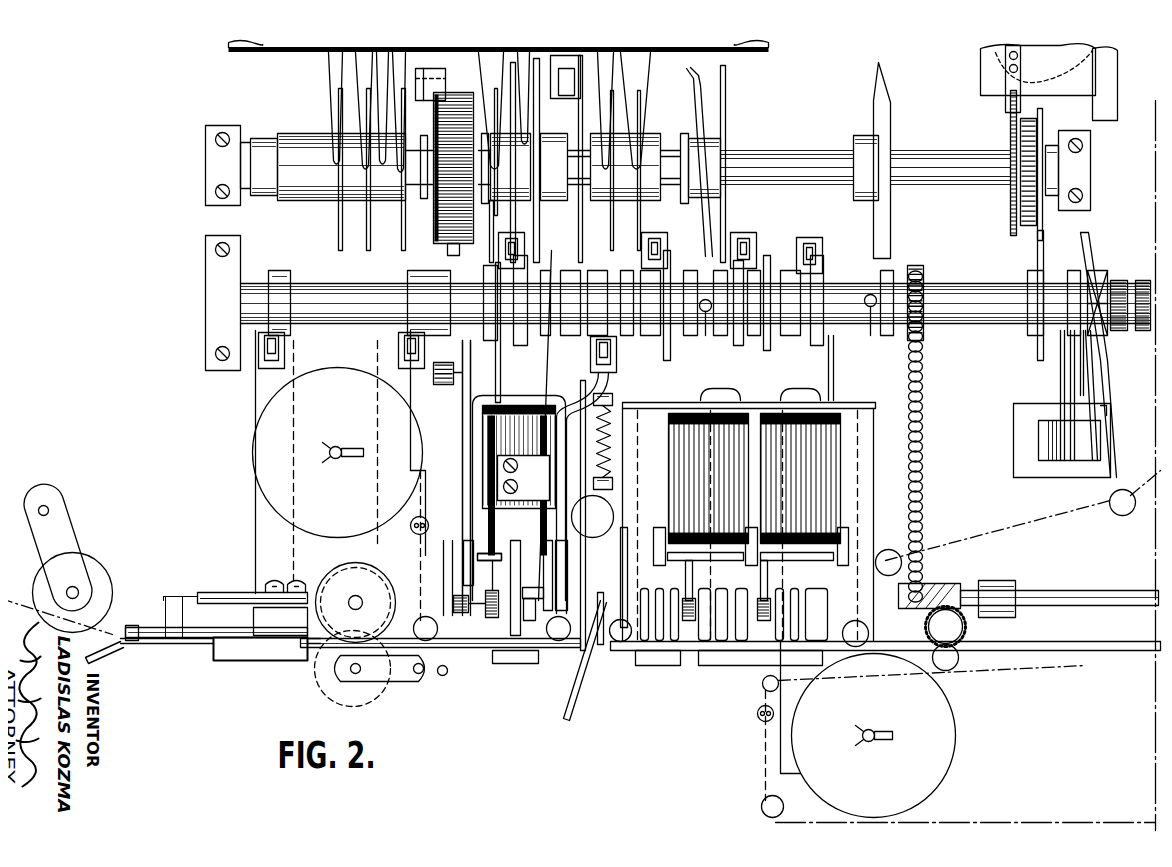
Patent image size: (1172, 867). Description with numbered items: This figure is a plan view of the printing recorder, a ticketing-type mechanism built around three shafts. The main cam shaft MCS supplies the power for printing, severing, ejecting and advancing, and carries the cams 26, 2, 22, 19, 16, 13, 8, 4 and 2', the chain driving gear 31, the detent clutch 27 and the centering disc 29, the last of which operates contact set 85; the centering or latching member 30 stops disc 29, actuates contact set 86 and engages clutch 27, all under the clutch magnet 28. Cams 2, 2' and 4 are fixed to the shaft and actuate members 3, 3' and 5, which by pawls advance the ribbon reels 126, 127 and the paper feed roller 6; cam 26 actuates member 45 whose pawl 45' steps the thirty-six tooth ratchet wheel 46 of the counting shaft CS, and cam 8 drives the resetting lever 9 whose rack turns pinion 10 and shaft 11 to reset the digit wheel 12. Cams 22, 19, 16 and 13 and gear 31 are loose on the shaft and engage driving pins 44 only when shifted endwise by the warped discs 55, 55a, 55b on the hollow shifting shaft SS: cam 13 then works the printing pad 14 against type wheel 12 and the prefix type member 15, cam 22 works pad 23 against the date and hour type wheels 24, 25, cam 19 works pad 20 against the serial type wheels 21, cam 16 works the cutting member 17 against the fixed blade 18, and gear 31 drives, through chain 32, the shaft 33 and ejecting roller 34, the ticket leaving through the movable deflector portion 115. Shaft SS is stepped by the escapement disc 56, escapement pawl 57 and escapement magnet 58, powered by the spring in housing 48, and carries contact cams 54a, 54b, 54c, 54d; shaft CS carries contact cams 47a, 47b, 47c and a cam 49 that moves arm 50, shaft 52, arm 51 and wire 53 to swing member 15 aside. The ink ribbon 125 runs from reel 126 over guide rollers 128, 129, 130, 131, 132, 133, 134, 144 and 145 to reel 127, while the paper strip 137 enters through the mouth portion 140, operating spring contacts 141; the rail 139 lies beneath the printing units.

The counting shaft CS is at (300, 134).
The hollow shifting shaft SS is at (470, 92).
The main cam shaft MCS is at (350, 325).
The cam 2 is at (268, 313).
The cam 2' is at (791, 313).
The member 3 is at (681, 436).
The member 3' is at (842, 368).
The cam 4 is at (406, 330).
The member 5 is at (382, 538).
The paper feed roller 6 is at (333, 572).
The cam 8 is at (460, 332).
The resetting lever 9 is at (465, 468).
The pinion 10 is at (460, 614).
The shaft 11 is at (485, 617).
The digit wheel 12 is at (512, 625).
The digit printing cam 13 is at (505, 340).
The printing pad 14 is at (510, 645).
The prefix type member 15 is at (530, 645).
The cam 16 is at (612, 350).
The cutting member 17 is at (600, 590).
The fixed blade 18 is at (572, 715).
The cam 19 is at (660, 358).
The printing pad 20 is at (640, 665).
The type wheels of serial number printer 21 is at (668, 588).
The cam 22 is at (740, 345).
The printing pad 23 is at (690, 665).
The type wheels of date printer 24 is at (706, 588).
The type wheels of hour printer 25 is at (790, 590).
The cam 26 is at (1046, 360).
The detent clutch 27 is at (1120, 332).
The clutch magnet 28 is at (1020, 448).
The centering disc 29 is at (1086, 262).
The centering or latching member 30 is at (1112, 255).
The chain driving gear 31 is at (908, 333).
The chain 32 is at (924, 447).
The shaft 33 is at (1045, 592).
The ejecting roller 34 is at (966, 627).
The driving pins 44 is at (580, 222).
The member 45 is at (1057, 177).
The pawl 45' is at (1004, 172).
The ratchet wheel 46 is at (1030, 242).
The contact cam 47a is at (337, 238).
The contact cam 47b is at (365, 250).
The contact cam 47c is at (401, 240).
The housing 48 is at (450, 246).
The cam 49 is at (424, 200).
The arm 50 is at (415, 82).
The arm 51 is at (578, 98).
The shaft 52 is at (455, 92).
The wire 53 is at (548, 378).
The contact cam 54a is at (489, 243).
The contact cam 54b is at (514, 216).
The contact cam 54c is at (612, 250).
The contact cam 54d is at (640, 222).
The warped discs 55 is at (540, 235).
The warped disc 55a is at (690, 80).
The warped disc 55b is at (725, 110).
The escapement disc 56 is at (1010, 230).
The escapement pawl 57 is at (1008, 105).
The escapement magnet 58 is at (985, 66).
The contact set 85 is at (1060, 392).
The contact set 86 is at (1100, 392).
The movable deflector portion 115 is at (1020, 645).
The ink ribbon 125 is at (422, 493).
The ribbon reel 126 is at (258, 450).
The ribbon reel 127 is at (930, 796).
The guide roller 128 is at (428, 616).
The guide roller 129 is at (557, 640).
The guide roller 130 is at (612, 508).
The guide roller 131 is at (618, 641).
The guide roller 132 is at (858, 620).
The guide roller 133 is at (890, 549).
The guide roller 134 is at (1122, 515).
The paper strip 137 is at (15, 597).
The rail 139 is at (318, 660).
The mouth portion 140 is at (168, 650).
The spring contacts 141 is at (194, 592).
The guide roller 144 is at (760, 806).
The guide roller 145 is at (762, 682).